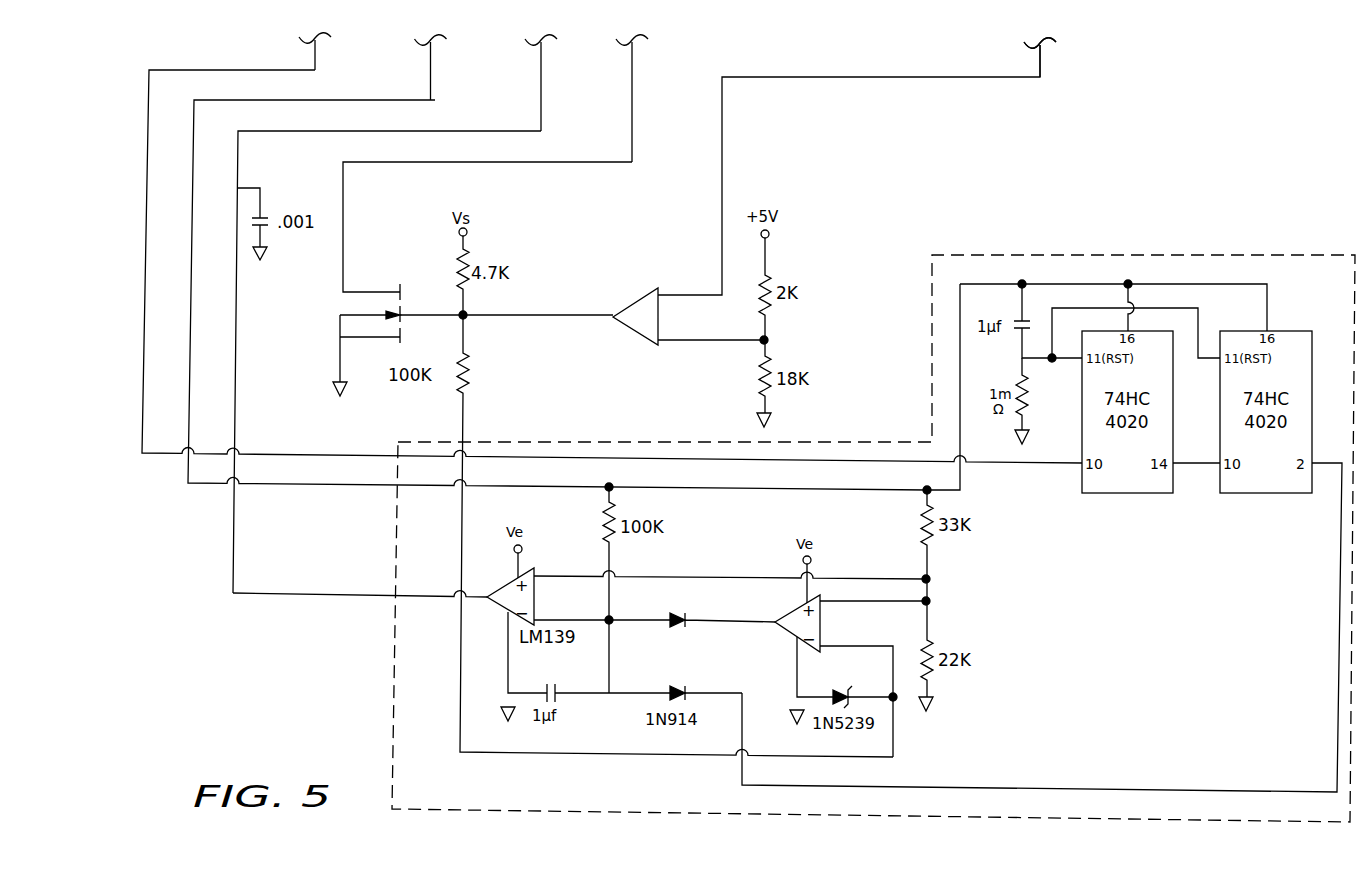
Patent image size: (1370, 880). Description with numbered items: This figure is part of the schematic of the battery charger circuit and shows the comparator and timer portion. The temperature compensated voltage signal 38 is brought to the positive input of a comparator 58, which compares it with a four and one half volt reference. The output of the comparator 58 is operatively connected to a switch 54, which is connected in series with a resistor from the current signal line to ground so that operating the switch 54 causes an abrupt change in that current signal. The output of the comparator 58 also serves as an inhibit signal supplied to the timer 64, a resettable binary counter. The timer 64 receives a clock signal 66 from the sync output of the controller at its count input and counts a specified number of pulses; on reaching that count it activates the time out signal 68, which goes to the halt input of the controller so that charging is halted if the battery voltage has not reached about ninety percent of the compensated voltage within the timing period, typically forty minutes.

The clock signal 66 is at (318, 66).
The voltage signal 38 is at (900, 77).
The switch 54 is at (340, 315).
The comparator 58 is at (641, 290).
The timer 64 is at (1143, 255).
The time out signal 68 is at (318, 595).